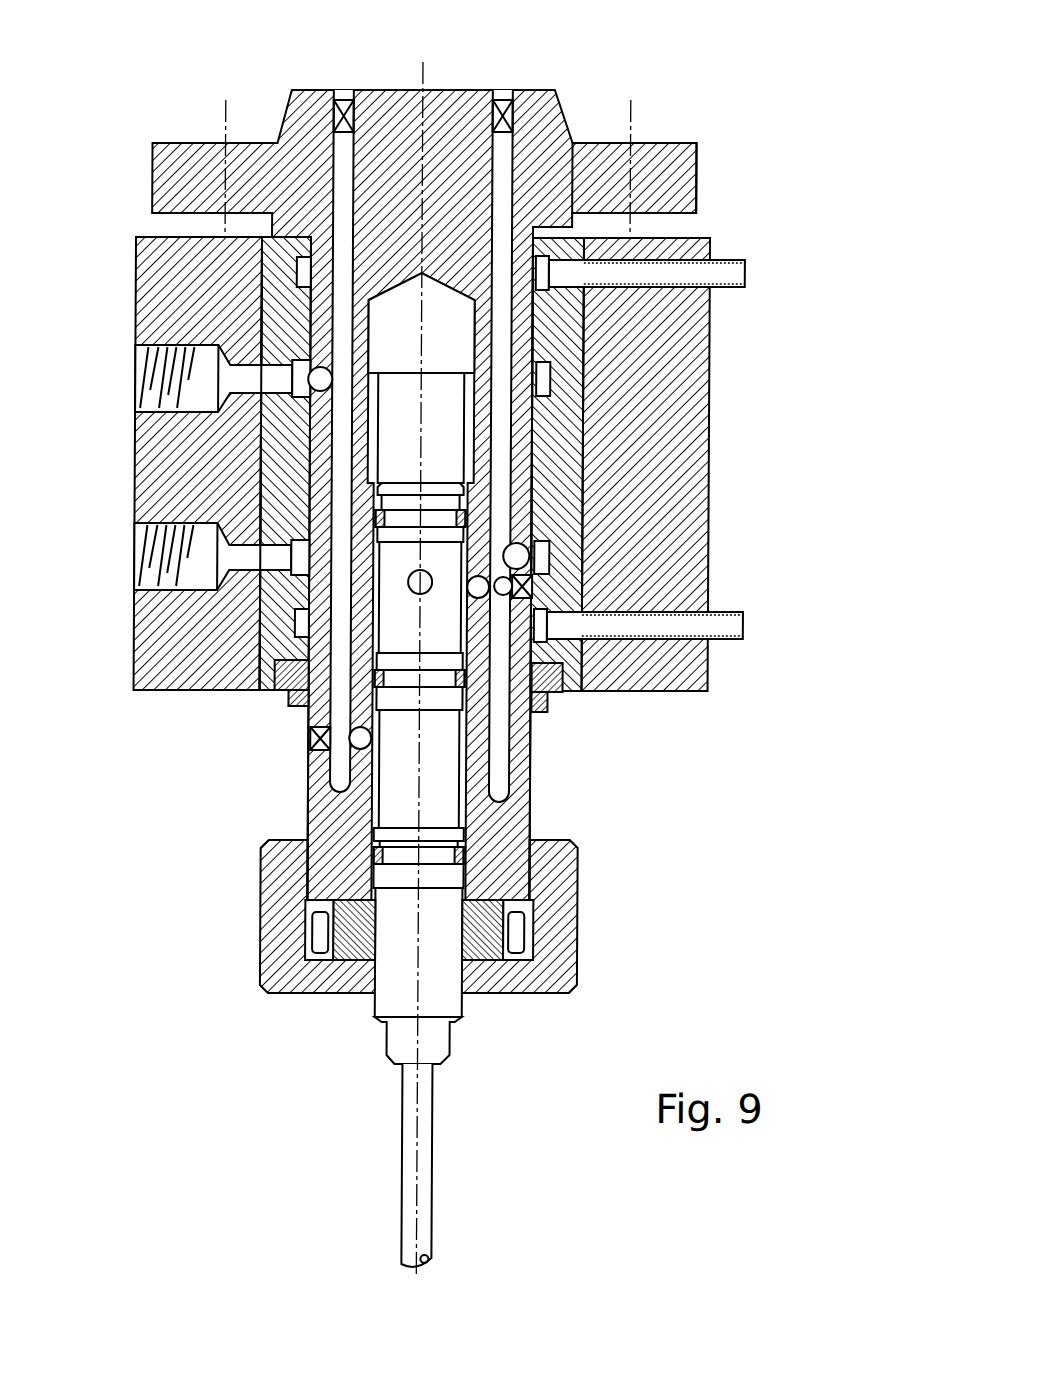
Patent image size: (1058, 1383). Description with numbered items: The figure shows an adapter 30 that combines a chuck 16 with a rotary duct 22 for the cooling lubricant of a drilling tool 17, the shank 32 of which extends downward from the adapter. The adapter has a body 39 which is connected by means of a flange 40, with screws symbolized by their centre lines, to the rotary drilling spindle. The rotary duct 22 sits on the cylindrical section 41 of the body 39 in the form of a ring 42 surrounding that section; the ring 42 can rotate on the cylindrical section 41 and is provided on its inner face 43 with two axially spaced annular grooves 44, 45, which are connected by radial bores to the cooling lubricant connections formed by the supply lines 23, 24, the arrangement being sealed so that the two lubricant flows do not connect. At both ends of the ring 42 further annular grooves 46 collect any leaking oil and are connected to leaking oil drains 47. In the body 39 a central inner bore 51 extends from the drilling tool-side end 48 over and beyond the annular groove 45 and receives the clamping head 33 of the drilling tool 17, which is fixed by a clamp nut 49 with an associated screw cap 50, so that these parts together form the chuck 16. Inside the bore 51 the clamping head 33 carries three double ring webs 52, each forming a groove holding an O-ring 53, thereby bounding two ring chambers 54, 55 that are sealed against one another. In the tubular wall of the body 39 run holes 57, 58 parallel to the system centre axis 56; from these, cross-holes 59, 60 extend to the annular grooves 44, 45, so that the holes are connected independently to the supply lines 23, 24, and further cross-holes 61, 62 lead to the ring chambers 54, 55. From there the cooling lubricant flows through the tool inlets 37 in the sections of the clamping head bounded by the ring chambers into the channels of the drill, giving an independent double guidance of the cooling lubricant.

The chuck 16 is at (240, 935).
The drilling tool 17 is at (442, 1126).
The rotary duct 22 is at (682, 464).
The supply line 23 is at (150, 578).
The supply line 24 is at (150, 395).
The adapter 30 is at (740, 94).
The shank 32 is at (430, 1200).
The clamping head 33 is at (390, 781).
The tool inlet 37 is at (421, 594).
The body 39 is at (528, 100).
The flange 40 is at (663, 155).
The cylindrical section 41 is at (318, 818).
The ring 42 is at (572, 456).
The inner face 43 is at (522, 487).
The annular groove 44 is at (300, 572).
The annular groove 45 is at (553, 381).
The further annular groove 46 is at (530, 600).
The leaking oil drain 47 is at (746, 268).
The drilling tool-side end 48 is at (556, 889).
The clamp nut 49 is at (356, 940).
The screw cap 50 is at (555, 967).
The bore 51 is at (390, 434).
The double ring web 52 is at (446, 502).
The O-ring 53 is at (378, 855).
The ring chamber 54 is at (470, 830).
The ring chamber 55 is at (527, 541).
The system centre axis 56 is at (428, 74).
The hole 57 is at (500, 157).
The hole 58 is at (340, 142).
The cross-hole 59 is at (553, 560).
The cross-hole 60 is at (318, 368).
The further cross-hole 61 is at (483, 600).
The seal 62 is at (360, 750).